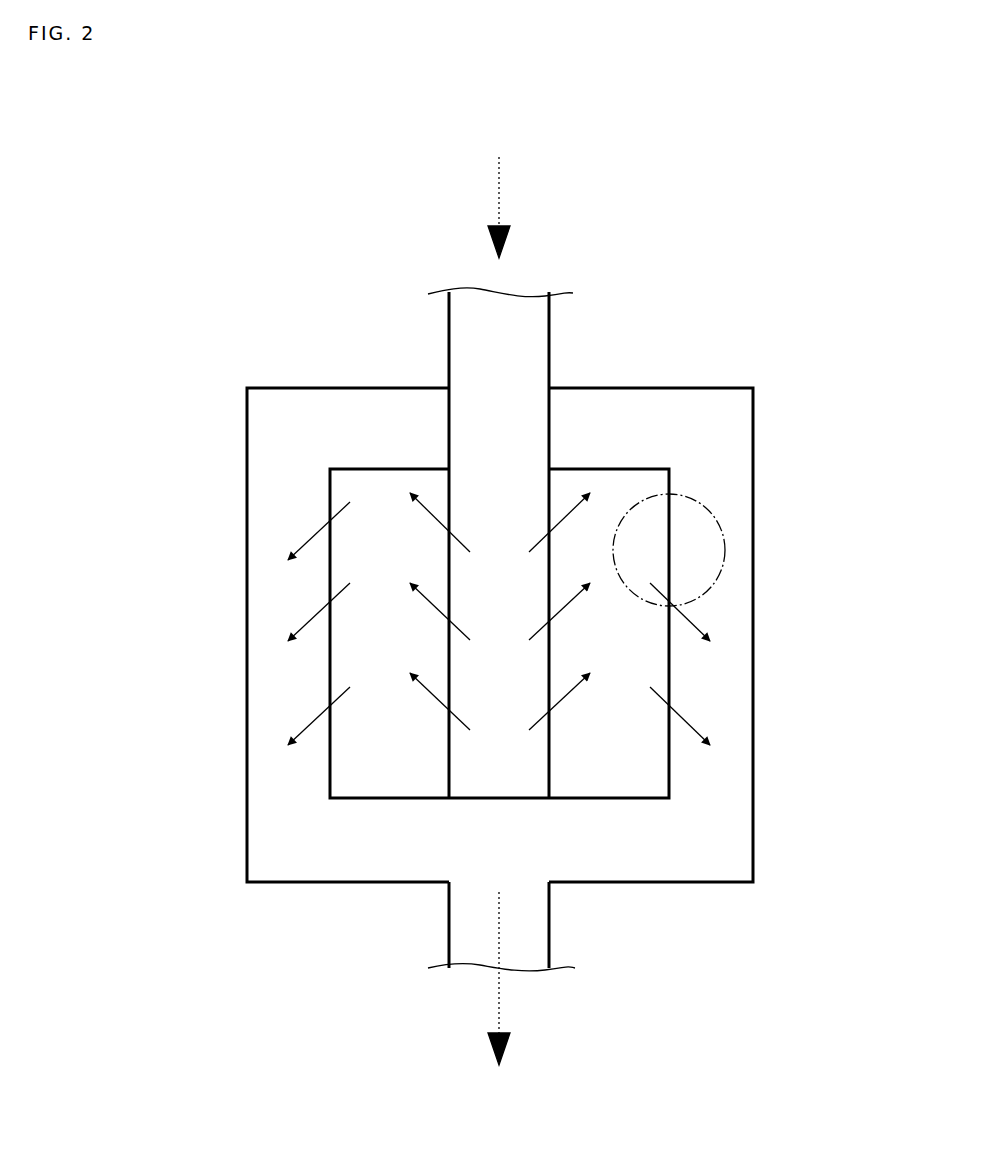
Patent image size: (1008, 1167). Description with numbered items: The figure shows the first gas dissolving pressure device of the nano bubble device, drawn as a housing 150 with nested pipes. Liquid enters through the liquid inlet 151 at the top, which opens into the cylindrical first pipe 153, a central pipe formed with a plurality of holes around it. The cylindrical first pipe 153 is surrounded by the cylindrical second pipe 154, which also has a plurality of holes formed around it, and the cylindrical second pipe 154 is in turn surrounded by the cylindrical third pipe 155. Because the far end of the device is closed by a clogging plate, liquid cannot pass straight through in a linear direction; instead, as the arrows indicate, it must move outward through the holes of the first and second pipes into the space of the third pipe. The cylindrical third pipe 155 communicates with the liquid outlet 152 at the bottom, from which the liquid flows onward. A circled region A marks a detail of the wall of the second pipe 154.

The housing 150 is at (244, 470).
The liquid inlet 151 is at (501, 176).
The liquid outlet 152 is at (537, 980).
The cylindrical first pipe 153 is at (510, 359).
The cylindrical second pipe 154 is at (617, 667).
The cylindrical third pipe 155 is at (287, 667).
The detail region A is at (717, 520).